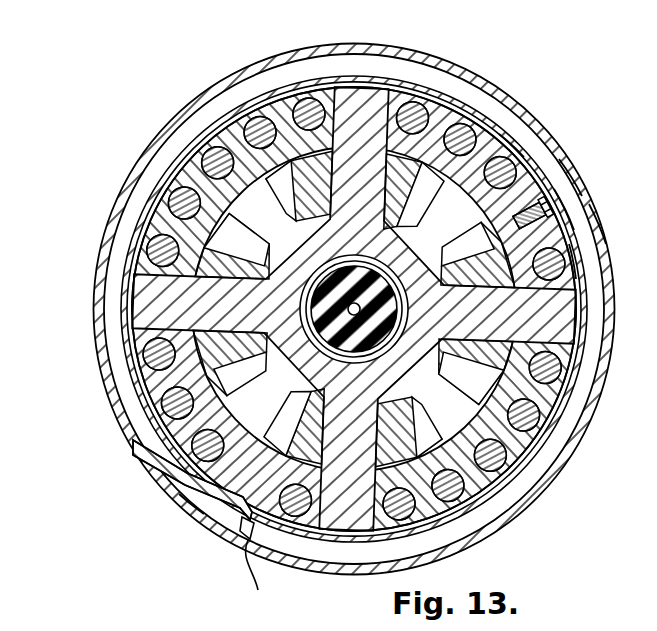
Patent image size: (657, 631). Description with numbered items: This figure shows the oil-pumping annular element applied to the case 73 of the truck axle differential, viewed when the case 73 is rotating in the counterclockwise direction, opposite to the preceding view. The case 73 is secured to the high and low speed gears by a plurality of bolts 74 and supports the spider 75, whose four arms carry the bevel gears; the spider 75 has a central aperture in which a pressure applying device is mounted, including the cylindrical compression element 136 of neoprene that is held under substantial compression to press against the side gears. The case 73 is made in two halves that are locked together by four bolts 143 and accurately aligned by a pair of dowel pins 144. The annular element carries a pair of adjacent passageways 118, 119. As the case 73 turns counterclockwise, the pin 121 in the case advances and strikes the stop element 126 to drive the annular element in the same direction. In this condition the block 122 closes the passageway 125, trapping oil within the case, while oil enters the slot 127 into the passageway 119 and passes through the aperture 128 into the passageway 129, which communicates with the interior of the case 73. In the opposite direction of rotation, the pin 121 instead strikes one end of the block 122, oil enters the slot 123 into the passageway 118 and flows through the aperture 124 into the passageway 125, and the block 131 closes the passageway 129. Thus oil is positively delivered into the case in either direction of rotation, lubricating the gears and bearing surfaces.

The case 73 is at (606, 257).
The bolts 74 is at (305, 102).
The spider 75 is at (385, 88).
The passageway 118 is at (585, 398).
The passageway 119 is at (125, 392).
The pin 121 is at (512, 148).
The block 122 is at (585, 200).
The slot 123 is at (436, 57).
The aperture 124 is at (598, 226).
The passageway 125 is at (572, 178).
The stop element 126 is at (503, 120).
The slot 127 is at (140, 462).
The aperture 128 is at (268, 577).
The passageway 129 is at (238, 520).
The block 131 is at (195, 502).
The cylindrical compression element 136 is at (362, 311).
The bolts 143 is at (178, 203).
The dowel pins 144 is at (253, 122).